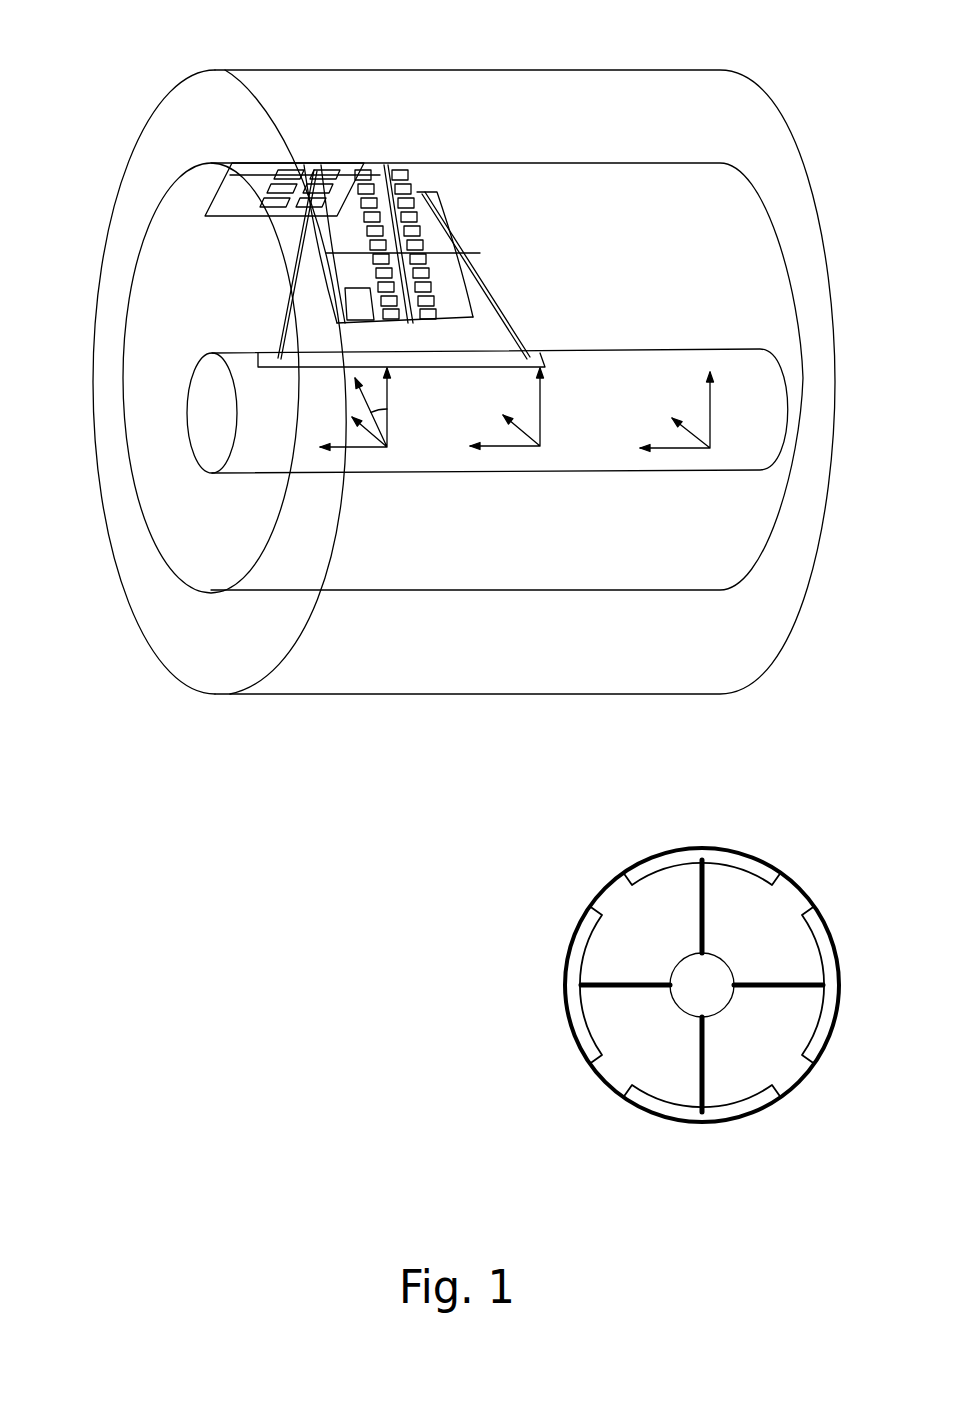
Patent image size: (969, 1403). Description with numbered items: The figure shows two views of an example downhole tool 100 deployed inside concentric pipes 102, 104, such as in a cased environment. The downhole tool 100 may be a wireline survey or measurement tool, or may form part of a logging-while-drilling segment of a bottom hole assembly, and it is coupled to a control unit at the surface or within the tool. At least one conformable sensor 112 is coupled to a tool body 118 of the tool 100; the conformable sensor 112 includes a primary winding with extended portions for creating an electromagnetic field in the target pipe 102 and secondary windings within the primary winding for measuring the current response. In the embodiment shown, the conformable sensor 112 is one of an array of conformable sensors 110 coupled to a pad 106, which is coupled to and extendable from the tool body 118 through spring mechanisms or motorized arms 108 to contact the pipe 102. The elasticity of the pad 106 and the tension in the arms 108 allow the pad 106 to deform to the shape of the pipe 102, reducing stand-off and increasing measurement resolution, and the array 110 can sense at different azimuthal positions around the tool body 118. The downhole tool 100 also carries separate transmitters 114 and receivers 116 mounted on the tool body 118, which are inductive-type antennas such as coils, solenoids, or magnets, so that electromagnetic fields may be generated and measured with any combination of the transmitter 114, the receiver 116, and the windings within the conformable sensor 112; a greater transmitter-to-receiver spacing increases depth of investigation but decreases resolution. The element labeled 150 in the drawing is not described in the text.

The downhole tool 100 is at (451, 595).
The pipe 102 is at (120, 298).
The pipe 104 is at (817, 207).
The pad 106 is at (264, 184).
The spring mechanisms or motorized arms 108 is at (703, 1075).
The array of conformable sensors 110 is at (417, 190).
The conformable sensor 112 is at (397, 310).
The transmitter 114 is at (492, 462).
The receiver 116 is at (668, 460).
The tool body 118 is at (185, 428).
The integrated circuit chip 150 is at (362, 295).